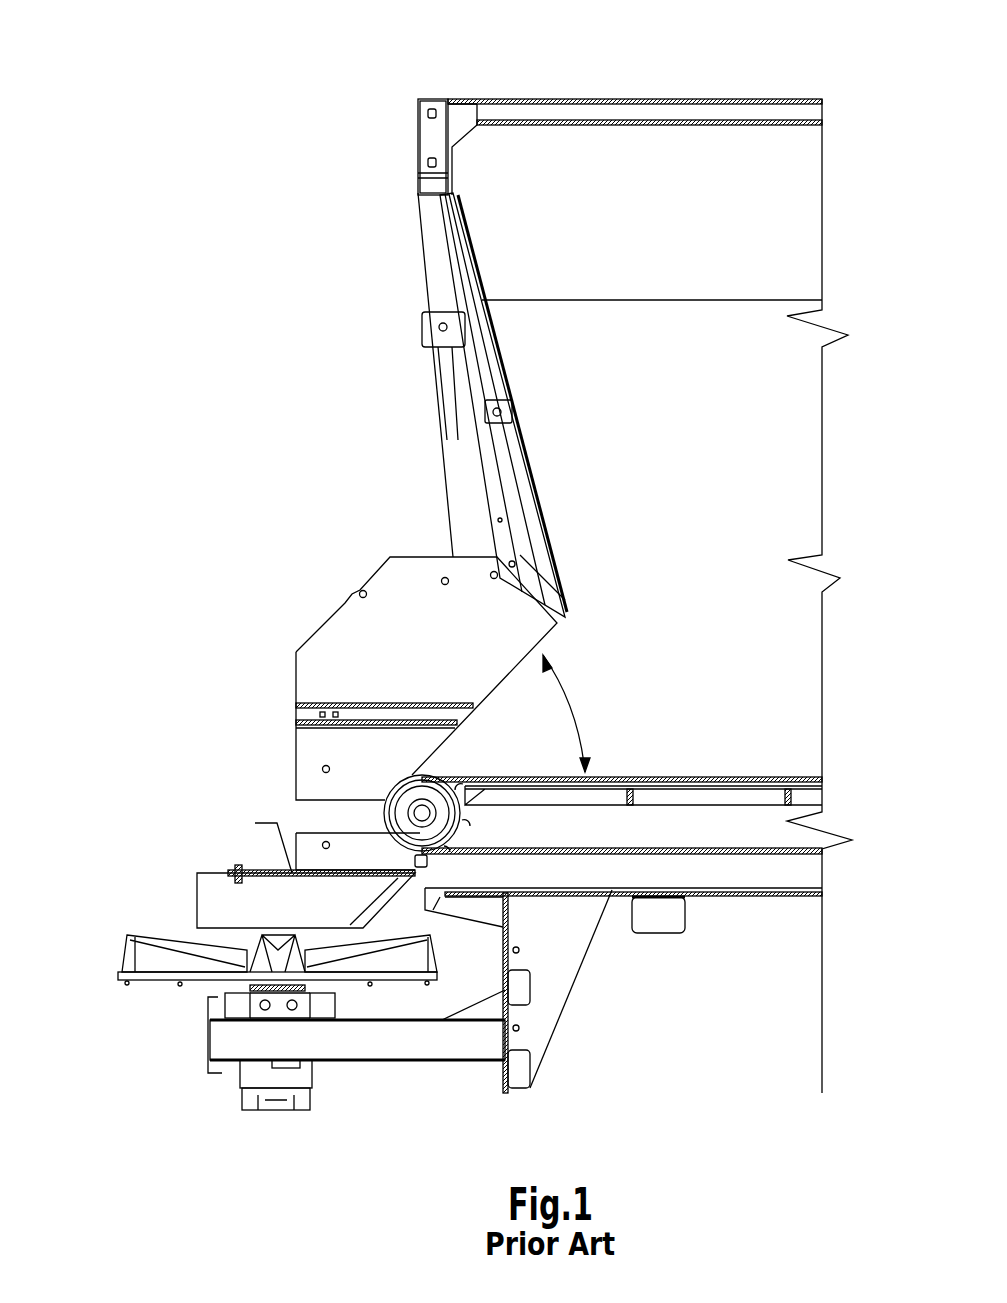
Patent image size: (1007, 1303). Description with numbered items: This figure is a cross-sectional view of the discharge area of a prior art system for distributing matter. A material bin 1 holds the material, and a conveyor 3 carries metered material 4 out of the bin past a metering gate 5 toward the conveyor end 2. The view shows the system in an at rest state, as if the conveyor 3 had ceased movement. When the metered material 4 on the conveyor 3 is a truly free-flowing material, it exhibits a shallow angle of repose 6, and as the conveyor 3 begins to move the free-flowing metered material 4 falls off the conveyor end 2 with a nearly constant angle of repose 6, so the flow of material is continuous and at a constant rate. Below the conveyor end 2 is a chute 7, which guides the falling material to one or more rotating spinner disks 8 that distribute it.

The material bin 1 is at (600, 112).
The conveyor end 2 is at (386, 806).
The conveyor 3 is at (463, 778).
The metered material 4 is at (555, 622).
The metering gate 5 is at (497, 562).
The angle of repose 6 is at (575, 708).
The chute 7 is at (337, 898).
The rotating spinner disks 8 is at (137, 957).